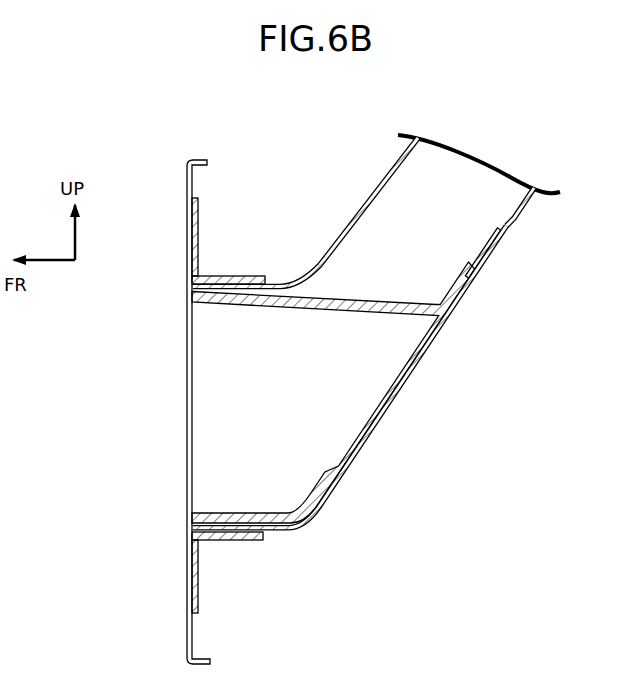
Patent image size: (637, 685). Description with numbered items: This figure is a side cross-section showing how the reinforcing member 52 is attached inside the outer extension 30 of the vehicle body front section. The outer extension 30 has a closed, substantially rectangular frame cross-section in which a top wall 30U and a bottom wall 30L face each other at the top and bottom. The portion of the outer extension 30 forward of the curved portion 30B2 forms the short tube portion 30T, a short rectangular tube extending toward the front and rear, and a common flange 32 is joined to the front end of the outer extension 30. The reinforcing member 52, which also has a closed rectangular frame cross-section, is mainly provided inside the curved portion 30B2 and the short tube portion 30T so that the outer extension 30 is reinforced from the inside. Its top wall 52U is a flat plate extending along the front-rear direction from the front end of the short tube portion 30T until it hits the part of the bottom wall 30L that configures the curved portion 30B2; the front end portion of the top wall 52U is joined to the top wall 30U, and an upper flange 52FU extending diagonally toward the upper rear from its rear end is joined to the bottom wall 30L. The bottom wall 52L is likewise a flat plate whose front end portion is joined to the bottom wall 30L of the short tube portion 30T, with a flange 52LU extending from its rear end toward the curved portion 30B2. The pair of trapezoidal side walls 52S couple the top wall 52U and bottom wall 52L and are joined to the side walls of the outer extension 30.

The outer extension 30 is at (372, 187).
The flange 32 is at (196, 177).
The top wall 30U is at (277, 283).
The upper flange 52FU is at (457, 273).
The top wall 52U is at (353, 292).
The side wall 52S is at (397, 350).
The bottom wall 30L is at (397, 395).
The curved portion 30B2 is at (357, 460).
The lower projecting flange of resin member 52LU is at (322, 487).
The bottom wall 52L is at (240, 513).
The short tube portion 30T is at (230, 540).
The reinforcing member 52 is at (187, 370).